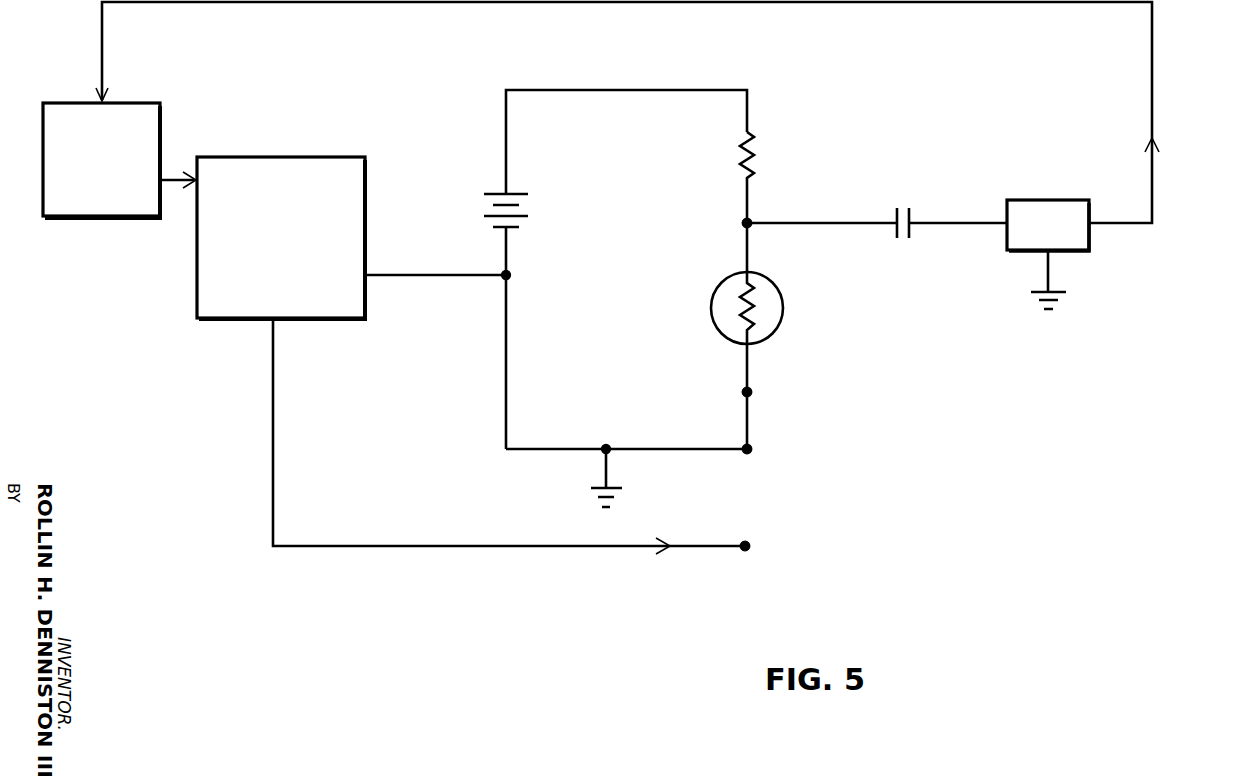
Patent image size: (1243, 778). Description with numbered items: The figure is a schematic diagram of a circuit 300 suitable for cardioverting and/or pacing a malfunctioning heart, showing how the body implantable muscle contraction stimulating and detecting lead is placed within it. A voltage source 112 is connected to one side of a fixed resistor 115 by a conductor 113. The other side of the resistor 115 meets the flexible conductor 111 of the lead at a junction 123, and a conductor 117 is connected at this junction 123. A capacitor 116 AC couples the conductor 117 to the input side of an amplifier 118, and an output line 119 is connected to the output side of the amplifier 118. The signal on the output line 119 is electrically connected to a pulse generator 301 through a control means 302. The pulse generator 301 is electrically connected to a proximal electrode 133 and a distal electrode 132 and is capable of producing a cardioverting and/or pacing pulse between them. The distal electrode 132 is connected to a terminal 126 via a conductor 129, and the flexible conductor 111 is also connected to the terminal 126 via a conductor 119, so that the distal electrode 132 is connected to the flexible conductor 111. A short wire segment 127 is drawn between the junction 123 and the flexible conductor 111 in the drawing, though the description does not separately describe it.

The circuit 300 is at (620, 679).
The pulse generator 301 is at (293, 155).
The control means 302 is at (62, 101).
The flexible conductor 111 is at (783, 328).
The voltage source 112 is at (519, 221).
The conductor 113 is at (637, 88).
The fixed resistor 115 is at (742, 178).
The capacitor 116 is at (915, 195).
The conductor 117 is at (812, 222).
The amplifier 118 is at (1027, 198).
The output line 119 is at (1152, 191).
The junction 123 is at (745, 222).
The terminal 126 is at (751, 392).
The wire segment 127 is at (750, 253).
The conductor 129 is at (748, 424).
The distal electrode 132 is at (751, 450).
The proximal electrode 133 is at (750, 545).